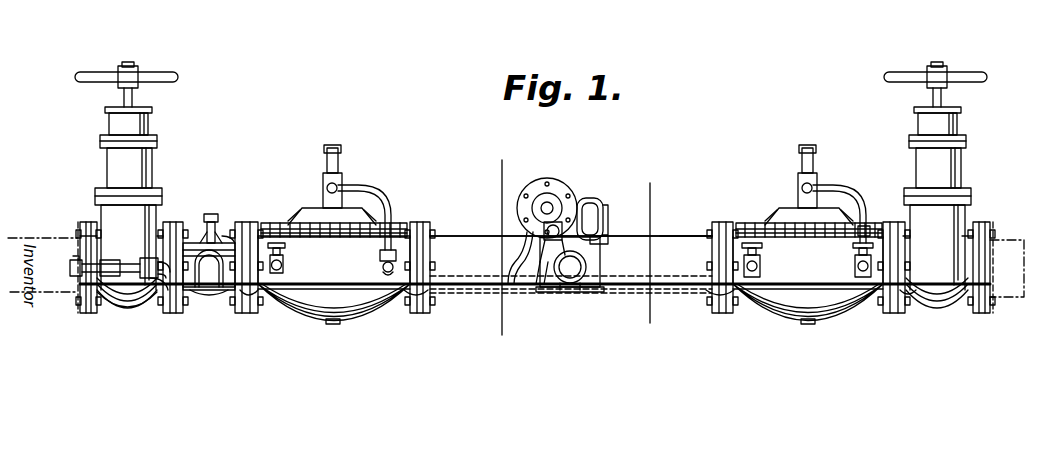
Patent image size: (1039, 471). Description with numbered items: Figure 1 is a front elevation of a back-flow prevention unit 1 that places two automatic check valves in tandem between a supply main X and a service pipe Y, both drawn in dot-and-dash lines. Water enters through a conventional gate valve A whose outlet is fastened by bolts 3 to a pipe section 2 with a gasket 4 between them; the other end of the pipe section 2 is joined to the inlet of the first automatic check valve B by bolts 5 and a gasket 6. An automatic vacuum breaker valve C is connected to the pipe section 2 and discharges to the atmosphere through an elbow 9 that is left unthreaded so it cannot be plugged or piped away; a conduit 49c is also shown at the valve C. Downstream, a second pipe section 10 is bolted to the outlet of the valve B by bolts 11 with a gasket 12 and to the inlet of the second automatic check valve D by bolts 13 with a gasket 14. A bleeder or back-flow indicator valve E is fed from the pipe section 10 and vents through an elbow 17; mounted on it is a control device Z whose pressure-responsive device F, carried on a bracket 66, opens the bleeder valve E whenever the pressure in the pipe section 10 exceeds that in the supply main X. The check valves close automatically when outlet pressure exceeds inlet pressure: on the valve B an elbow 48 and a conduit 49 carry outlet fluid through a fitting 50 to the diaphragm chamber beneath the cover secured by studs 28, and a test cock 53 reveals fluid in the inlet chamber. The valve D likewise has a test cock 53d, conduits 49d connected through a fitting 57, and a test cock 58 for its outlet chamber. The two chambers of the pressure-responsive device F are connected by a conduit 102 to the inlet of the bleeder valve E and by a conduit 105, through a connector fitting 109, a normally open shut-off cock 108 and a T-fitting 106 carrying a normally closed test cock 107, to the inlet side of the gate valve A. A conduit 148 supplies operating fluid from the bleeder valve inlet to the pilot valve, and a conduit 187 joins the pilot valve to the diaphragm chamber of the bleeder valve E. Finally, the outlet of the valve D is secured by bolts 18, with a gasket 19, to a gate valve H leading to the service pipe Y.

The back-flow prevention unit 1 is at (672, 236).
The pipe section 2 is at (217, 294).
The bolts 3 is at (161, 314).
The gasket 4 is at (174, 314).
The bolts 5 is at (243, 311).
The gasket 6 is at (254, 314).
The elbow 9 is at (203, 290).
The second pipe section 10 is at (490, 294).
The bolts 11 is at (431, 228).
The gasket 12 is at (413, 311).
The bolts 13 is at (715, 313).
The gasket 14 is at (723, 220).
The elbow 17 is at (564, 293).
The bolts 18 is at (908, 308).
The gasket 19 is at (893, 313).
The studs 28 is at (274, 223).
The elbow 48 is at (379, 257).
The conduit 49 is at (390, 201).
The connecting pipe 49c is at (241, 223).
The conduit 49d is at (843, 187).
The fitting 50 is at (346, 180).
The test cock 53 is at (286, 262).
The test cock 53d is at (763, 270).
The fitting 57 is at (876, 223).
The test cock 58 is at (855, 278).
The bracket 66 is at (527, 225).
The conduit 102 is at (541, 290).
The conduit 105 is at (372, 297).
The T-fitting 106 is at (118, 260).
The test cock 107 is at (71, 266).
The shut-off cock 108 is at (147, 280).
The connector fitting 109 is at (131, 314).
The conduit 148 is at (603, 229).
The conduit 187 is at (603, 210).
The gate valve A is at (108, 169).
The first automatic check valve B is at (345, 141).
The automatic vacuum breaker valve C is at (201, 235).
The second automatic check valve D is at (811, 140).
The bleeder valve E is at (594, 294).
The pressure-responsive device F is at (564, 177).
The gate valve H is at (961, 176).
The supply main X is at (28, 238).
The service pipe Y is at (1012, 240).
The control device Z is at (589, 193).